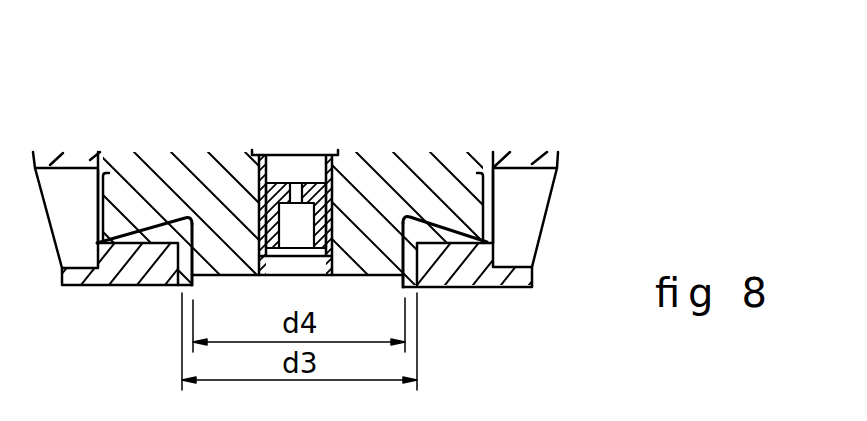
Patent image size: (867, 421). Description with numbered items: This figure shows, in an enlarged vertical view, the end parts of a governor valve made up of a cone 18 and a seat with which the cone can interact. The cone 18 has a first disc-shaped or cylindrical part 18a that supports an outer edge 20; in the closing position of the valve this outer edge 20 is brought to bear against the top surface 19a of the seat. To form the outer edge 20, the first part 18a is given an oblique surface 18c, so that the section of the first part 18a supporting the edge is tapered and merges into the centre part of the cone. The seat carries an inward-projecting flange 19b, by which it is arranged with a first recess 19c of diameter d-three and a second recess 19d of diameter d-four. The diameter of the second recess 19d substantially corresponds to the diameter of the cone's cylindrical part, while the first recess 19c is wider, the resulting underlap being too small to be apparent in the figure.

The cone 18 is at (358, 152).
The first disc-shaped or cylindrical part 18a is at (115, 182).
The oblique surface 18c is at (432, 222).
The top surface 19a is at (153, 228).
The inward-projecting flange 19b is at (181, 290).
The first recess 19c is at (418, 249).
The second recess 19d is at (400, 287).
The outer edge 20 is at (492, 192).